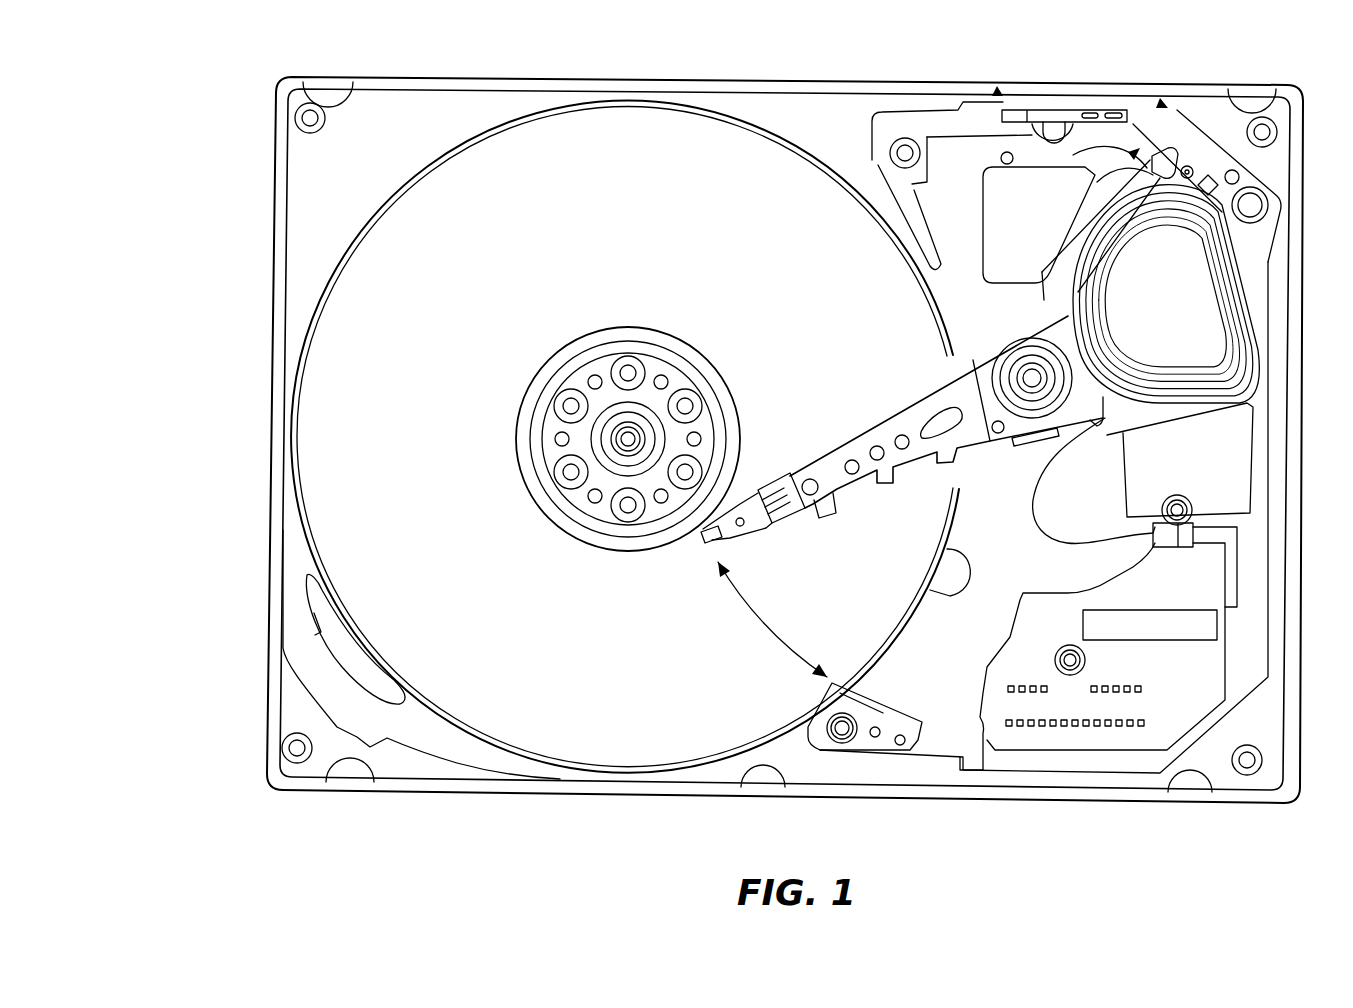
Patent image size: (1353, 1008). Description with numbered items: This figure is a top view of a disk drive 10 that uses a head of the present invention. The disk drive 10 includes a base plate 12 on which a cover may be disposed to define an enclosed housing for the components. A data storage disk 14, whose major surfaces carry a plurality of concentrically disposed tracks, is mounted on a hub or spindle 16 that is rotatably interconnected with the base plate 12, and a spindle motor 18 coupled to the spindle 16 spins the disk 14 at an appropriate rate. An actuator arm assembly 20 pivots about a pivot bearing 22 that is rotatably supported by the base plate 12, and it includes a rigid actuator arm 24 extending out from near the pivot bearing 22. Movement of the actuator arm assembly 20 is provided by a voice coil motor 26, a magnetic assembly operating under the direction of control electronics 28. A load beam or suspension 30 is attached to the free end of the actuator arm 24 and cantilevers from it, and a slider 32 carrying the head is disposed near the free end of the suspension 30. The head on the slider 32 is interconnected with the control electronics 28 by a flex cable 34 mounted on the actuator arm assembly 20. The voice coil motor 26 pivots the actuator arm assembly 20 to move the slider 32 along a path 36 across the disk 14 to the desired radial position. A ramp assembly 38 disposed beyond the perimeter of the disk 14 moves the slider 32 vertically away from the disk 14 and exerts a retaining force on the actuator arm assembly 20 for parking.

The disk drive 10 is at (203, 177).
The base plate 12 is at (503, 80).
The data storage disk 14 is at (648, 133).
The spindle 16 is at (655, 330).
The spindle motor 18 is at (600, 410).
The actuator arm assembly 20 is at (892, 398).
The pivot bearing 22 is at (1025, 403).
The actuator arm 24 is at (870, 492).
The voice coil motor 26 is at (1166, 294).
The control electronics 28 is at (1074, 735).
The suspension 30 is at (752, 487).
The slider 32 is at (697, 550).
The flex cable 34 is at (1040, 535).
The path 36 is at (763, 627).
The ramp assembly 38 is at (868, 742).